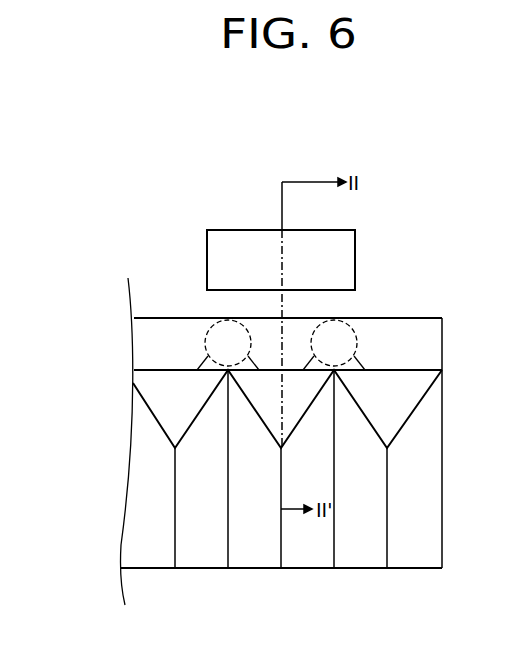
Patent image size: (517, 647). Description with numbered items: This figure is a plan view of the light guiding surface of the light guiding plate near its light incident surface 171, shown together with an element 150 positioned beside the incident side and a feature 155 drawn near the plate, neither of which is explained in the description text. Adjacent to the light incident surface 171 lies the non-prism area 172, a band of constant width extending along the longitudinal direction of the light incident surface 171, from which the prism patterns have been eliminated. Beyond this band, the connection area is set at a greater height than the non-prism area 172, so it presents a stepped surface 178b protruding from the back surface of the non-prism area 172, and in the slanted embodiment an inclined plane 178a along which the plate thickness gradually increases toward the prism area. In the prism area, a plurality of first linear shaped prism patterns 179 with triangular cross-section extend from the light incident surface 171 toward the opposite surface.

The light source 150 is at (355, 258).
The light beam / emitted light 155 is at (358, 340).
The light incident surface 171 is at (140, 318).
The non-prism area 172 is at (145, 334).
The inclined plane 178a is at (172, 402).
The stepped surface 178b is at (140, 370).
The first linear shaped prism patterns 179 is at (140, 505).